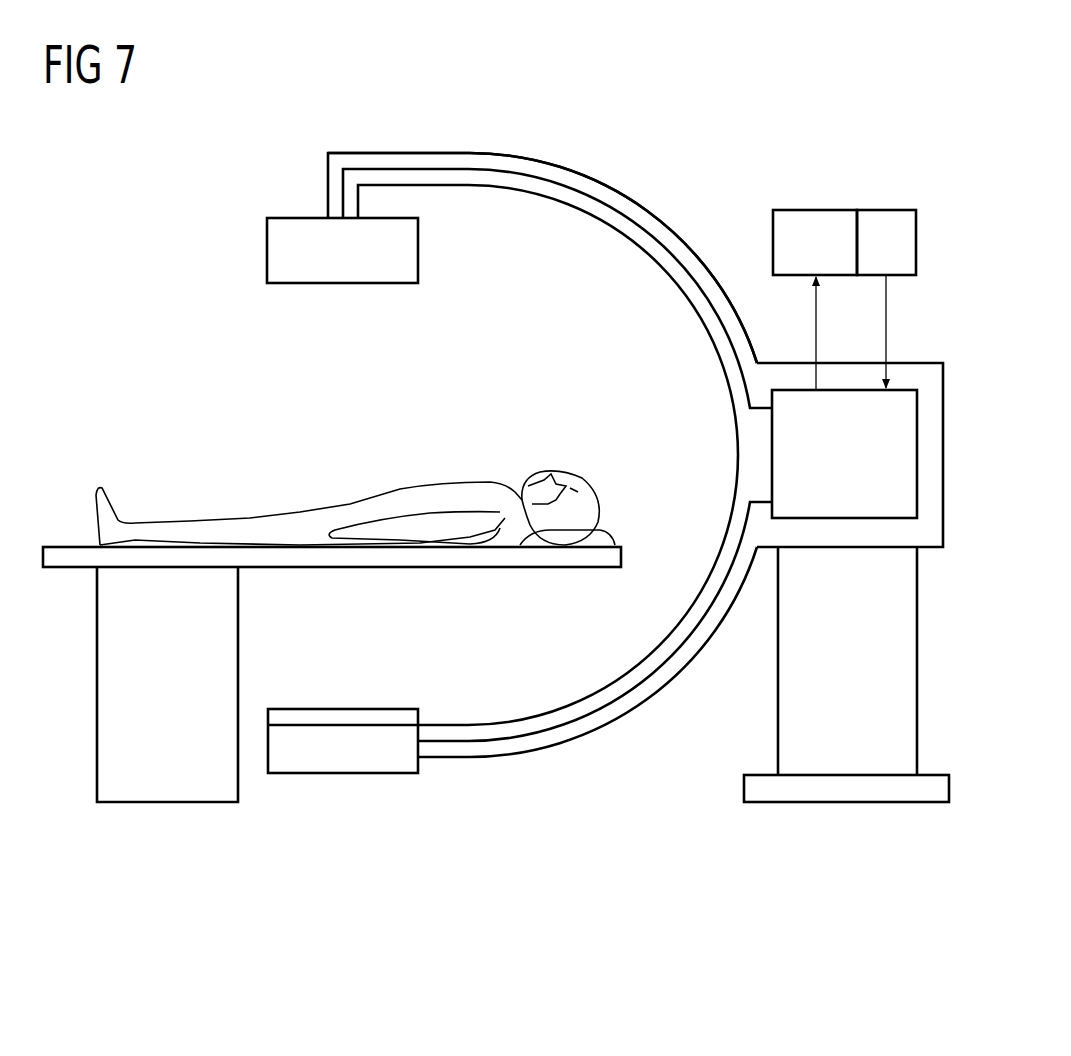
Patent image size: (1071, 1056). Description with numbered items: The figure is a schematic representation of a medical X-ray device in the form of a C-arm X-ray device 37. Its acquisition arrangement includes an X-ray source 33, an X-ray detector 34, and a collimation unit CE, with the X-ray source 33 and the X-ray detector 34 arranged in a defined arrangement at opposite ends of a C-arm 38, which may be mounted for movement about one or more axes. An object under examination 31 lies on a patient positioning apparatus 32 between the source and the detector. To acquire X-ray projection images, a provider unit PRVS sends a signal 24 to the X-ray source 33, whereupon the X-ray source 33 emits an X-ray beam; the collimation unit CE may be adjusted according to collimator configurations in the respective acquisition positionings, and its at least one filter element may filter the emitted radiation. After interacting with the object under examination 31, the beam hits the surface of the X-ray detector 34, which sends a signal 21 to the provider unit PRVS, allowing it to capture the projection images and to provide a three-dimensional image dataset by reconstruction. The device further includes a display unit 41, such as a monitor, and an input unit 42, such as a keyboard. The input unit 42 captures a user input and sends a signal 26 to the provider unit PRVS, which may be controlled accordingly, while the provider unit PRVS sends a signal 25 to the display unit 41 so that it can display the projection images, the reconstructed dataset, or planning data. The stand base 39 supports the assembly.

The signal 21 is at (428, 168).
The signal 24 is at (515, 742).
The signal 25 is at (814, 307).
The signal 26 is at (888, 305).
The object under examination 31 is at (405, 480).
The patient positioning apparatus 32 is at (151, 814).
The X-ray source 33 is at (343, 775).
The X-ray detector 34 is at (295, 216).
The C-arm X-ray device 37 is at (584, 139).
The C-arm 38 is at (380, 151).
The base / stand 39 is at (845, 804).
The display unit 41 is at (810, 208).
The input unit 42 is at (884, 208).
The collimation unit CE is at (342, 720).
The provider unit PRVS is at (855, 520).